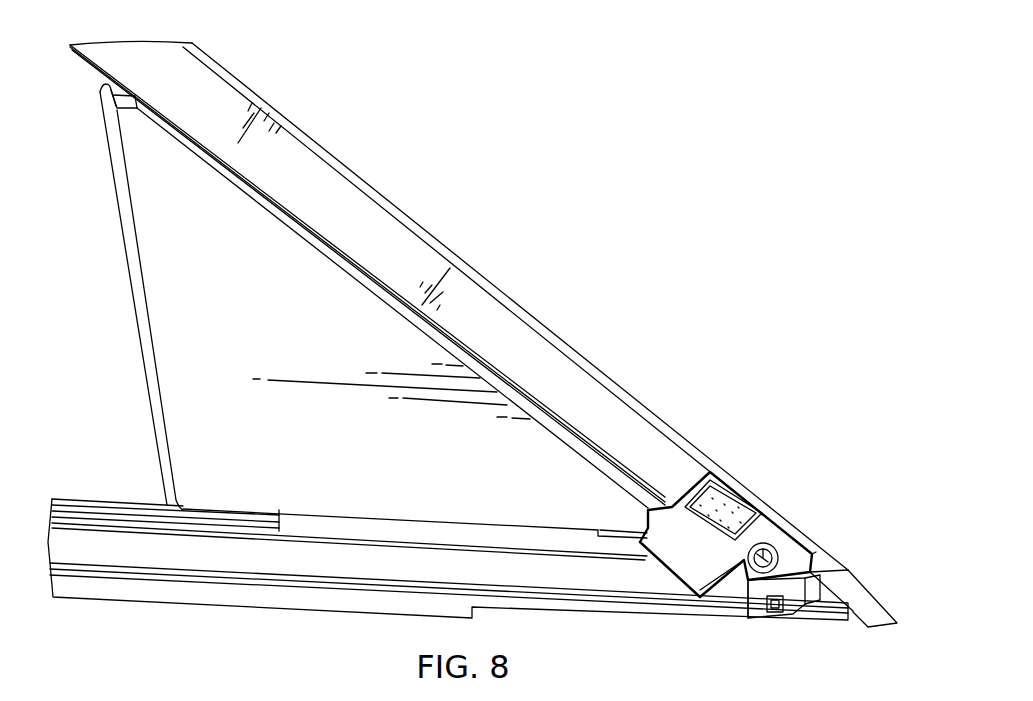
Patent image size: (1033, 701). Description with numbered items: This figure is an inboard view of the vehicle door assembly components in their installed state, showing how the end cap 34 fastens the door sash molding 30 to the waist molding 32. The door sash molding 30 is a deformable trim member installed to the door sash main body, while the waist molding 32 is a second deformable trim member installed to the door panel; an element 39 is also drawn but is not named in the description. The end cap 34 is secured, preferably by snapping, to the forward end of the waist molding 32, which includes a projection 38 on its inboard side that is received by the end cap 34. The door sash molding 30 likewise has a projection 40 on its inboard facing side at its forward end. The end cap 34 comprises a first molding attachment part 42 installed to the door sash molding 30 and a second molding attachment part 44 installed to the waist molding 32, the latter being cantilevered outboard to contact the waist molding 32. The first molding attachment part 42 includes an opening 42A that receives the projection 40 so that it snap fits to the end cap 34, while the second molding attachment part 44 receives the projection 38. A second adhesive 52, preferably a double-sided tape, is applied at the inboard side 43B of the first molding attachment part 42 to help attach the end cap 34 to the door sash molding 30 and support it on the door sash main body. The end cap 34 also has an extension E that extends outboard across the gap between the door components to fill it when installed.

The door sash molding 30 is at (342, 208).
The waist molding 32 is at (120, 550).
The end cap 34 is at (670, 480).
The projection 38 is at (783, 612).
The division bar 39 is at (192, 285).
The projection 40 is at (738, 580).
The first molding attachment part 42 is at (688, 478).
The opening 42A is at (771, 540).
The inboard side 43B is at (683, 545).
The second molding attachment part 44 is at (757, 608).
The second adhesive 52 is at (737, 495).
The extension E is at (647, 512).